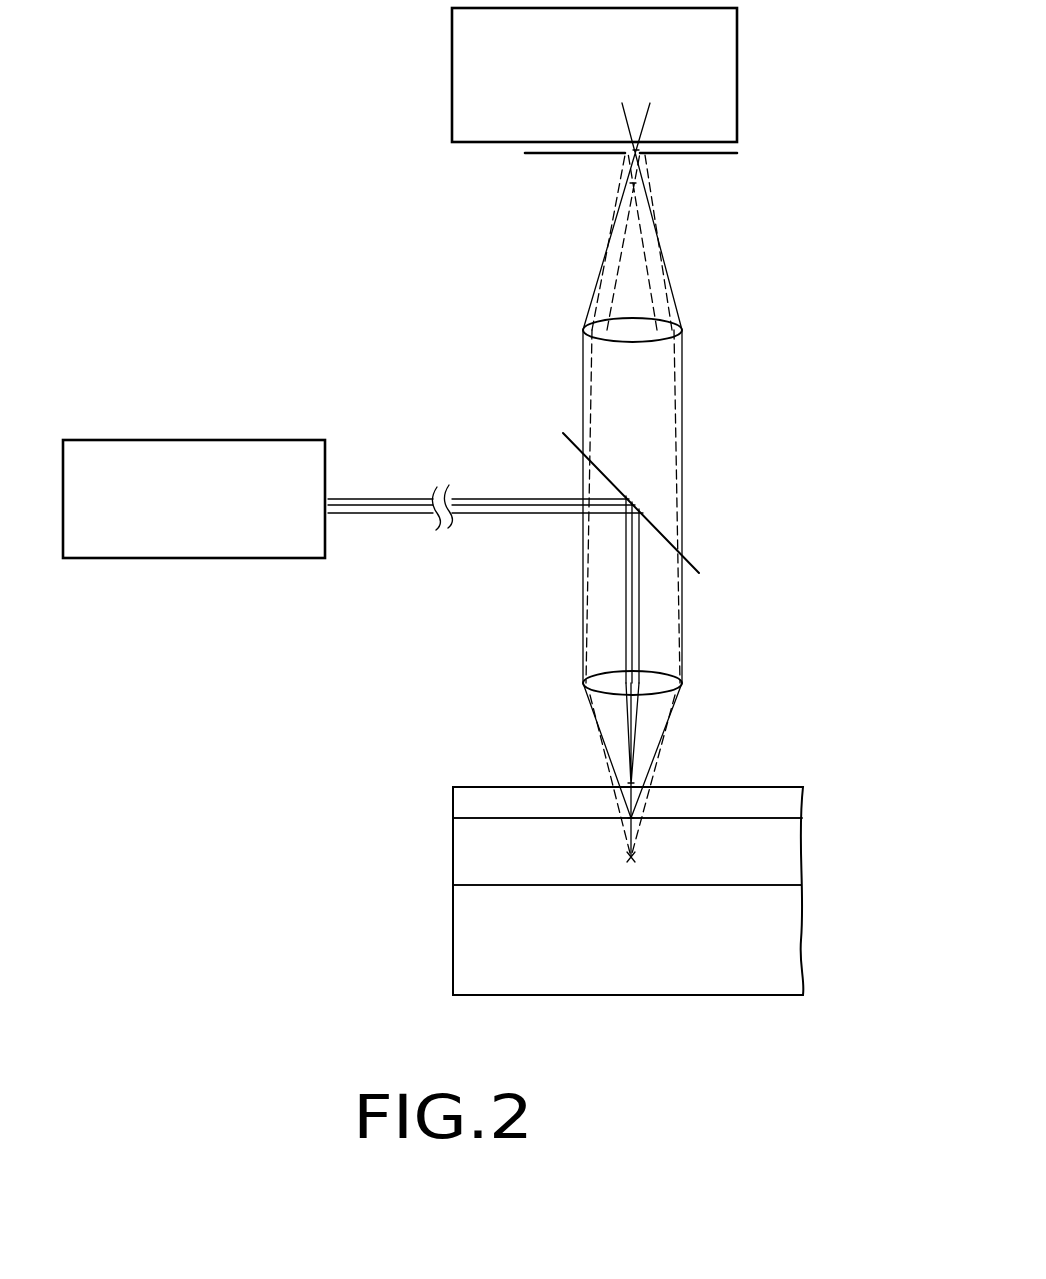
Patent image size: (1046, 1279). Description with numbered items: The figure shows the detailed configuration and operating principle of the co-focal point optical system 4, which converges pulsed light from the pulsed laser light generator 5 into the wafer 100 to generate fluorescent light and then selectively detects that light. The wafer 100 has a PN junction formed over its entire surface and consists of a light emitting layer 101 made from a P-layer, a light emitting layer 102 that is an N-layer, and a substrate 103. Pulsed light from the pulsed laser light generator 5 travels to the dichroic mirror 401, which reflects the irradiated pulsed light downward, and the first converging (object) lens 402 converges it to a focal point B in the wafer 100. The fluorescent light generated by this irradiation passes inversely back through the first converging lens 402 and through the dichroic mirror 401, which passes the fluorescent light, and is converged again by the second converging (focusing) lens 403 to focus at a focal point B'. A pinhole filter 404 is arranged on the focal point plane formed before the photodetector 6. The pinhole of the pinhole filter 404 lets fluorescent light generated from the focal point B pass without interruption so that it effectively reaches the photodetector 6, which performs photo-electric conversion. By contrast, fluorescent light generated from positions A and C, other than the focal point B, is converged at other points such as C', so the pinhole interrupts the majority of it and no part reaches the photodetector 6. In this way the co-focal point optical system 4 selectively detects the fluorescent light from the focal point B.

The photodetector 6 is at (738, 30).
The pinhole filter 404 is at (737, 153).
The co-focal point optical system 4 is at (787, 464).
The second converging (focusing) lens 403 is at (682, 330).
The dichroic mirror 401 is at (695, 568).
The first converging (object) lens 402 is at (682, 683).
The pulsed laser light generator 5 is at (191, 559).
The wafer 100 is at (520, 787).
The light emitting layer (P-layer) 101 is at (453, 800).
The light emitting layer (N-layer) 102 is at (453, 853).
The substrate 103 is at (453, 933).
The position A is at (640, 782).
The focal point B is at (671, 836).
The position C is at (666, 866).
The focal point B' is at (711, 120).
The convergence point C' is at (686, 192).